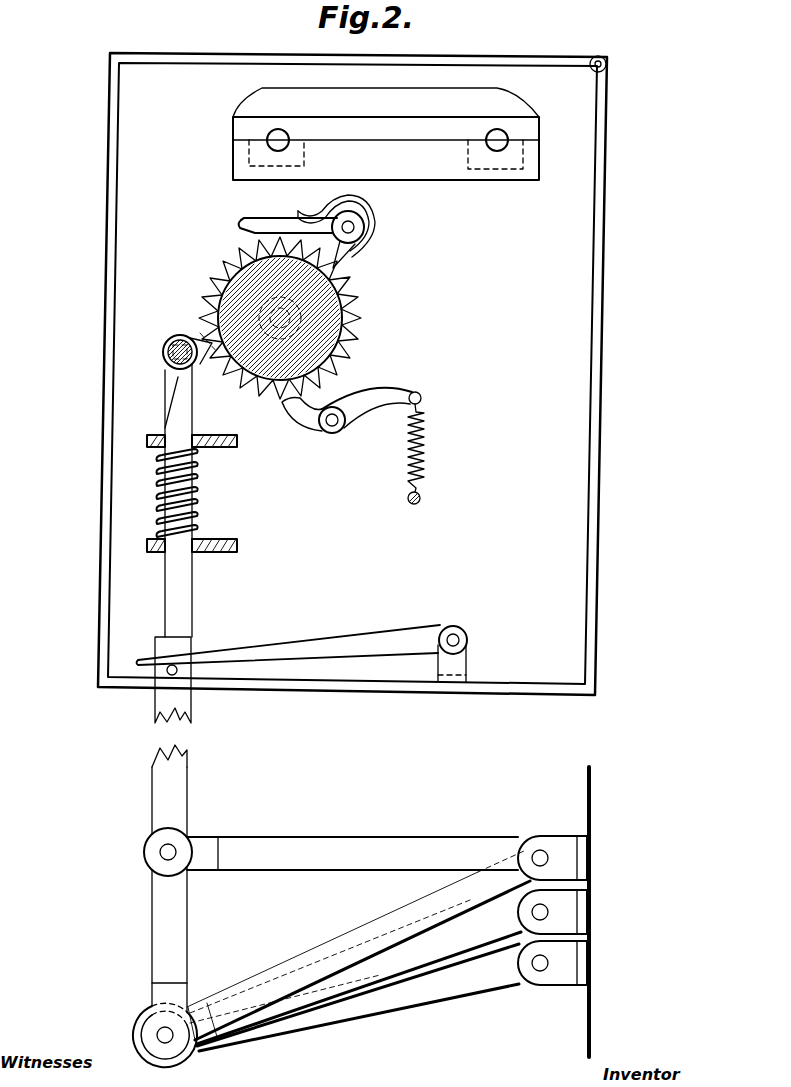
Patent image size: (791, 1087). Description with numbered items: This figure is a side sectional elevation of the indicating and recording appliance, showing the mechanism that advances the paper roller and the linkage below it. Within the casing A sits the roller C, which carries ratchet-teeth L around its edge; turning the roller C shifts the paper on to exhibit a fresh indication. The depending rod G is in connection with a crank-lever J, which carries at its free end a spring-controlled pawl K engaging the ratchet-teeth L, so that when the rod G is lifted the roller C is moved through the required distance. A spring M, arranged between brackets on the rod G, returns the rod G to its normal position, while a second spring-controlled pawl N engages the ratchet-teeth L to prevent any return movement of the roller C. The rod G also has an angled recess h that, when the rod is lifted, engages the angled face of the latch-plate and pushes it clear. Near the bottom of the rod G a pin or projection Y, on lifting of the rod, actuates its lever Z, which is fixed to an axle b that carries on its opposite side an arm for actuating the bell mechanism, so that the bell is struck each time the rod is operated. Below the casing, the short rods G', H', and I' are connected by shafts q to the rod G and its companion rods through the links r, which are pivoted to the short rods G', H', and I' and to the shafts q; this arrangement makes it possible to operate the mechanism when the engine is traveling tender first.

The casing frame plate A is at (352, 374).
The spring-controlled pawl K is at (291, 224).
The ratchet-teeth L is at (232, 259).
The crank-lever J is at (348, 255).
The roller C is at (330, 327).
The angled recess h is at (168, 386).
The rod G is at (168, 715).
The spring M is at (195, 481).
The spring-controlled pawl N is at (358, 412).
The pin or projection Y is at (176, 667).
The lever Z is at (325, 645).
The axle b is at (458, 636).
The links r is at (215, 817).
The shafts q is at (543, 848).
The short rod G' is at (355, 945).
The short rod H' is at (362, 970).
The short rod I' is at (358, 997).